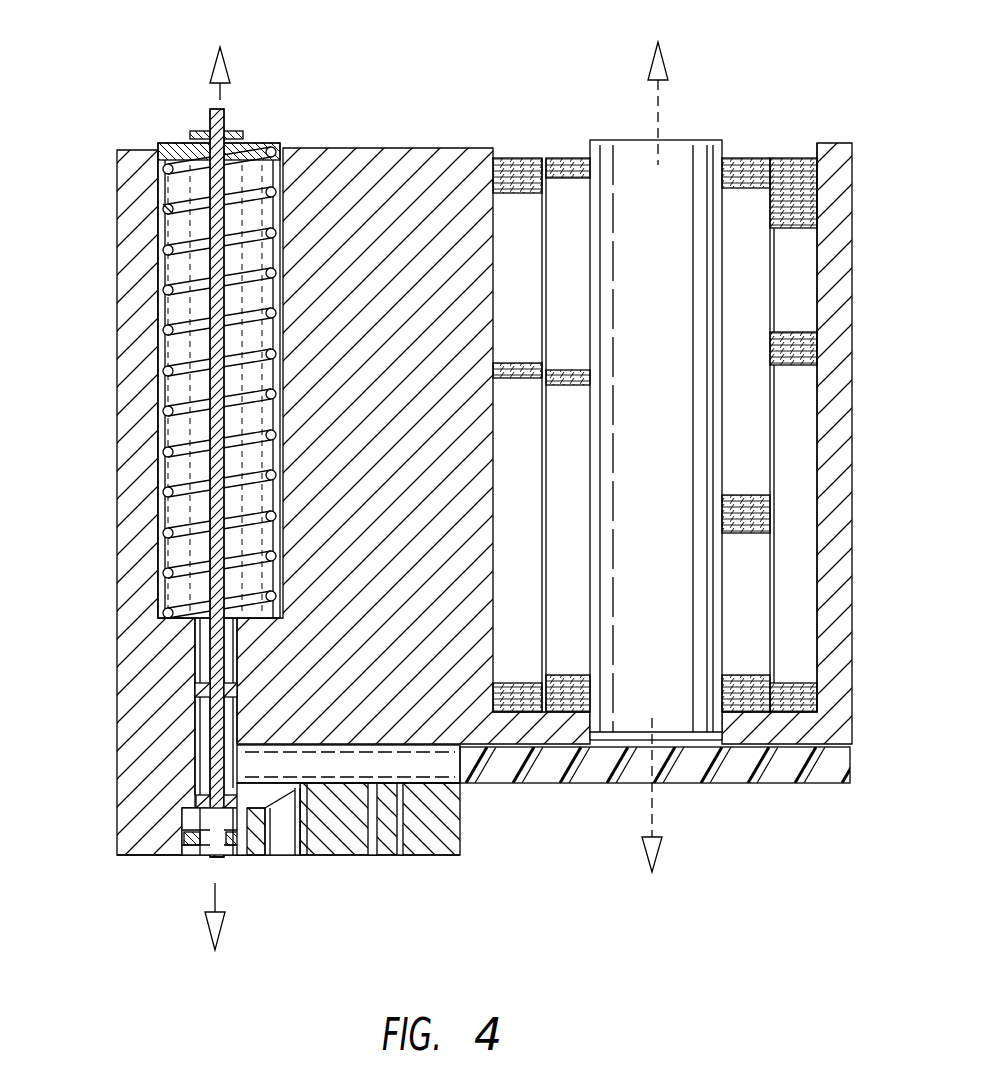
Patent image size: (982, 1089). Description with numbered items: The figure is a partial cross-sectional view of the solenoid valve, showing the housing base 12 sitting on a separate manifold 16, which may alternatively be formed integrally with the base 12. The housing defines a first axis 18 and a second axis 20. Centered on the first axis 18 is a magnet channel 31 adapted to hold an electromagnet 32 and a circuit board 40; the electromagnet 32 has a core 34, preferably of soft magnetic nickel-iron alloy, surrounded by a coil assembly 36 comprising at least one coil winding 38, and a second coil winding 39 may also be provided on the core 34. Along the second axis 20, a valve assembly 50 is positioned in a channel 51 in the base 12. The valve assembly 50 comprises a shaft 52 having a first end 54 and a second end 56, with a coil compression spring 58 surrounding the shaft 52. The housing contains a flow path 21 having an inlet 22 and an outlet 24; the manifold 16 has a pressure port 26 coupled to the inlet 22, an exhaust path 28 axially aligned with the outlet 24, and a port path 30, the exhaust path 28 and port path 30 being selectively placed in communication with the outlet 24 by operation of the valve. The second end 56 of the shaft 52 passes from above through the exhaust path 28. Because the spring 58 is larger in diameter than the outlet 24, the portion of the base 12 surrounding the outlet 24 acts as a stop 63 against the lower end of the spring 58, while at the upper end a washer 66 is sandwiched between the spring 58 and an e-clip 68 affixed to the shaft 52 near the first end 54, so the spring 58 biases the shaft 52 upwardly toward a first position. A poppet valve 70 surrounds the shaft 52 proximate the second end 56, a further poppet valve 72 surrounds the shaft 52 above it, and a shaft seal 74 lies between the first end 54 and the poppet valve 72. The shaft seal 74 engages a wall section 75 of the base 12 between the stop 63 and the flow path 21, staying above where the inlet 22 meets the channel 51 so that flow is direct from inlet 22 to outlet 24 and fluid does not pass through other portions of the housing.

The base 12 is at (90, 438).
The manifold 16 is at (95, 897).
The first axis 18 is at (666, 48).
The second axis 20 is at (226, 63).
The flow path 21 is at (292, 758).
The inlet 22 is at (388, 784).
The outlet 24 is at (186, 780).
The pressure port 26 is at (385, 851).
The exhaust path 28 is at (186, 867).
The port path 30 is at (295, 857).
The magnet channel 31 is at (512, 138).
The electromagnet 32 is at (774, 137).
The core 34 is at (700, 148).
The coil assembly 36 is at (832, 250).
The coil winding 38 is at (818, 347).
The second coil winding 39 is at (772, 525).
The circuit board 40 is at (753, 785).
The valve assembly 50 is at (116, 658).
The channel 51 is at (150, 378).
The shaft 52 is at (210, 309).
The first end 54 is at (212, 108).
The second end 56 is at (221, 860).
The coil compression spring 58 is at (165, 205).
The stop 63 is at (163, 617).
The washer 66 is at (255, 148).
The e-clip 68 is at (243, 131).
The poppet valve 70 is at (186, 840).
The poppet valve 72 is at (196, 804).
The shaft seal 74 is at (195, 690).
The wall section 75 is at (196, 745).